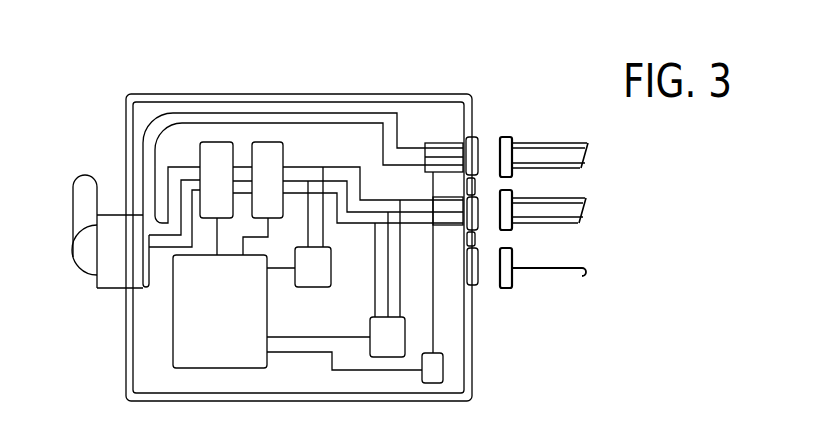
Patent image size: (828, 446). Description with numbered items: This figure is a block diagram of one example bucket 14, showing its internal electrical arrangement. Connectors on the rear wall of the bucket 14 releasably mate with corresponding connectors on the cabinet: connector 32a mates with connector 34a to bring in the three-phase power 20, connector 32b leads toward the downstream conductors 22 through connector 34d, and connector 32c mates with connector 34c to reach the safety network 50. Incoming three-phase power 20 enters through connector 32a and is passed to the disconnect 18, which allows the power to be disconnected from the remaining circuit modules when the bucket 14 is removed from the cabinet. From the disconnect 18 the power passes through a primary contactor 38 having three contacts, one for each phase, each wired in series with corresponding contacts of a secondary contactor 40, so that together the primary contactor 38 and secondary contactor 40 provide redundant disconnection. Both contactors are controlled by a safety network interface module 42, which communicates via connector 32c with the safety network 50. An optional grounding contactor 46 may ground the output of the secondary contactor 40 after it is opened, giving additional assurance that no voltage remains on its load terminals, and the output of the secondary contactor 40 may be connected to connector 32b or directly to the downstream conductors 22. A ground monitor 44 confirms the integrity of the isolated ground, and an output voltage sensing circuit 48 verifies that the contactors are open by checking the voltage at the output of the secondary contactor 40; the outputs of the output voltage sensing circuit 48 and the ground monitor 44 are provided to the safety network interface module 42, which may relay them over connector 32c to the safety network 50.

The bucket 14 is at (474, 102).
The disconnect 18 is at (88, 263).
The three-phase power 20 is at (593, 141).
The downstream conductors 22 is at (602, 222).
The connector 32a is at (479, 135).
The connector 32b is at (483, 212).
The connector 32c is at (477, 285).
The connector 34a is at (507, 137).
The connector 34c is at (507, 288).
The connector 34d is at (513, 190).
The primary contactor 38 is at (214, 148).
The secondary contactor 40 is at (264, 148).
The safety network interface module 42 is at (234, 319).
The ground monitor 44 is at (433, 378).
The grounding contactor 46 is at (387, 350).
The output voltage sensing circuit 48 is at (313, 280).
The safety network 50 is at (560, 270).